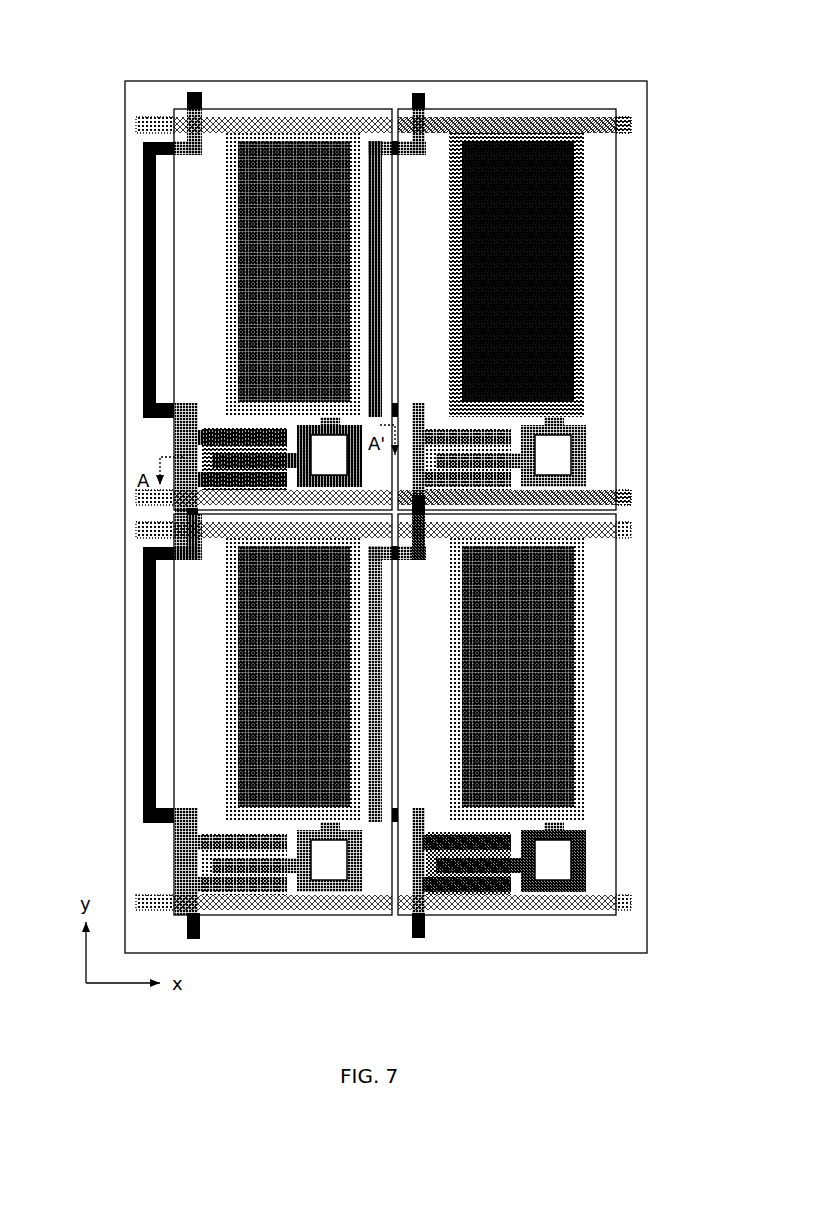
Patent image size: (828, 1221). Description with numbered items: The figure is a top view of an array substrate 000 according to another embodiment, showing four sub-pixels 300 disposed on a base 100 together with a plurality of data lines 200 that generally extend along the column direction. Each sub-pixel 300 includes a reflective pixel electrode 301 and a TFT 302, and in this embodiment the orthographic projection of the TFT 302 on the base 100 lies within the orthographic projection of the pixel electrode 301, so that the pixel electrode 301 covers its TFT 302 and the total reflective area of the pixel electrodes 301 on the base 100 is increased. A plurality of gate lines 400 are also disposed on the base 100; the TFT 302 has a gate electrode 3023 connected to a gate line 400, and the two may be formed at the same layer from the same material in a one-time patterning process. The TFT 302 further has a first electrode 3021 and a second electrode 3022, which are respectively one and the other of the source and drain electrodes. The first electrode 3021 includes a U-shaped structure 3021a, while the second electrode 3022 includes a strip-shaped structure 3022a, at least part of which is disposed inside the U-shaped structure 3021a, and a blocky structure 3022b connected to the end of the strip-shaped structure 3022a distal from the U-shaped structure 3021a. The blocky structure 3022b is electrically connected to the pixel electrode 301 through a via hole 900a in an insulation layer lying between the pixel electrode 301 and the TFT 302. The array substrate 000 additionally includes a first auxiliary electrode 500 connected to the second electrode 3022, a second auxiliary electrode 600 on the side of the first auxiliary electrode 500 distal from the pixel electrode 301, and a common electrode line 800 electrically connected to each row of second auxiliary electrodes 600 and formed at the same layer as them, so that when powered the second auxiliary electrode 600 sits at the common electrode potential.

The array substrate 000 is at (403, 488).
The base 100 is at (632, 91).
The data line 200 is at (418, 92).
The sub-pixel 300 is at (194, 316).
The pixel electrode 301 is at (186, 365).
The TFT 302 is at (215, 452).
The gate line 400 is at (632, 497).
The first auxiliary electrode 500 is at (557, 350).
The second auxiliary electrode 600 is at (585, 315).
The common electrode line 800 is at (632, 125).
The via hole 900a is at (580, 850).
The first electrode 3021 is at (438, 939).
The U-shaped structure 3021a is at (433, 890).
The second electrode 3022 is at (537, 936).
The strip-shaped structure 3022a is at (497, 872).
The blocky structure 3022b is at (568, 889).
The gate electrode 3023 is at (457, 892).